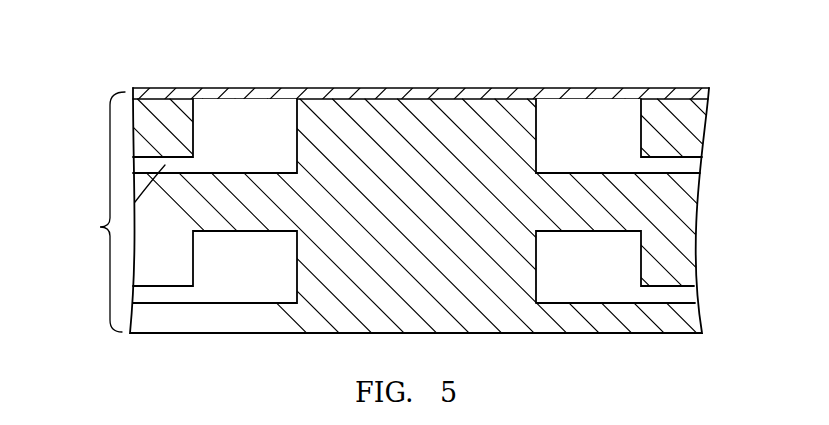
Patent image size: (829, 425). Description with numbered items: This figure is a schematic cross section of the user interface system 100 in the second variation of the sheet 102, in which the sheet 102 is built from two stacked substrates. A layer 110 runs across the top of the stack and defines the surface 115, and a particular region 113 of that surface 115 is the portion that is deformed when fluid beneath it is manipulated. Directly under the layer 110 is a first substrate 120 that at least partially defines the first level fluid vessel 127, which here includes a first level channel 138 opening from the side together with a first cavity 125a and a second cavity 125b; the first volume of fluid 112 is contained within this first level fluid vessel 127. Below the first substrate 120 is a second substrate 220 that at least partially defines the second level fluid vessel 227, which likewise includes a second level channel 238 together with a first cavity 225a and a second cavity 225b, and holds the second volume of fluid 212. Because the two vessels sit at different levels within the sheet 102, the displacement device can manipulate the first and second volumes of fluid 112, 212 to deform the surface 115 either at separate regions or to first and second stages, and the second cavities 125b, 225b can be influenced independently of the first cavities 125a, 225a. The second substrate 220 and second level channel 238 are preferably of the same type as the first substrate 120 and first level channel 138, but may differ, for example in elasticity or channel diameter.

The user interface system 100 is at (78, 97).
The sheet 102 is at (94, 212).
The layer 110 is at (340, 95).
The first volume of fluid 112 is at (208, 117).
The particular region 113 is at (243, 87).
The surface 115 is at (647, 90).
The first substrate 120 is at (673, 205).
The first cavity 125a is at (265, 155).
The second cavity 125b is at (607, 155).
The first level fluid vessel 127 is at (212, 160).
The first level channel 138 is at (140, 163).
The second volume of fluid 212 is at (267, 287).
The second substrate 220 is at (237, 320).
The first cavity 225a is at (265, 277).
The second cavity 225b is at (607, 277).
The second level fluid vessel 227 is at (213, 288).
The second level channel 238 is at (145, 293).